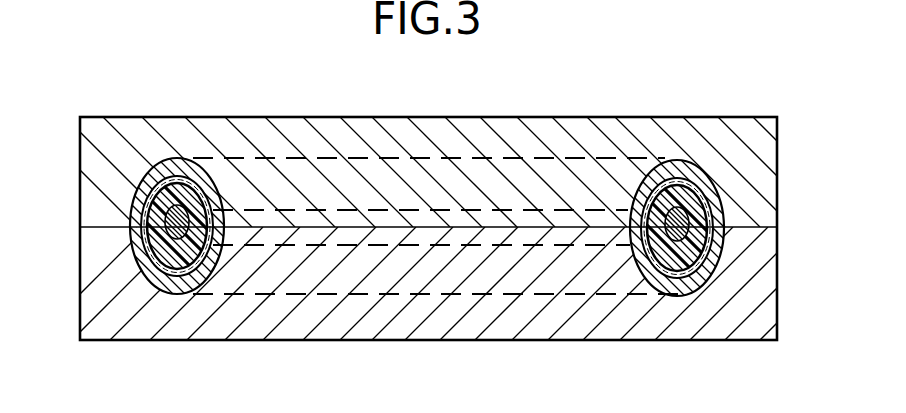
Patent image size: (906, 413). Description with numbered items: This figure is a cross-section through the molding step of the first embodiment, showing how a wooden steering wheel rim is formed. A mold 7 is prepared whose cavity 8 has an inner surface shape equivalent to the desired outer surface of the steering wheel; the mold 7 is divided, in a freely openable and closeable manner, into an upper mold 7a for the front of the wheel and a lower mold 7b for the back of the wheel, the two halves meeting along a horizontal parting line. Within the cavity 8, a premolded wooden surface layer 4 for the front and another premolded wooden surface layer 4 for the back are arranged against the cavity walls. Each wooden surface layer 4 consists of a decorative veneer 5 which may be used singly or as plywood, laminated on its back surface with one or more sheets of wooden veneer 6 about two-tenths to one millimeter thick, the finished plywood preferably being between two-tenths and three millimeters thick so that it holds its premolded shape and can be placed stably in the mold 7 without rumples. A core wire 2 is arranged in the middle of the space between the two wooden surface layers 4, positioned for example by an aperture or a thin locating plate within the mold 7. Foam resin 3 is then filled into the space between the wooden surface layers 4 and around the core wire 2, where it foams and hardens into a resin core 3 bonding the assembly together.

The core wire 2 is at (131, 208).
The resin core 3 is at (152, 184).
The wooden surface layer 4 is at (404, 197).
The decorative veneer 5 is at (148, 280).
The wooden veneer 6 is at (144, 247).
The mold 7 is at (697, 117).
The upper mold 7a is at (761, 185).
The lower mold 7b is at (757, 291).
The cavity 8 is at (541, 160).